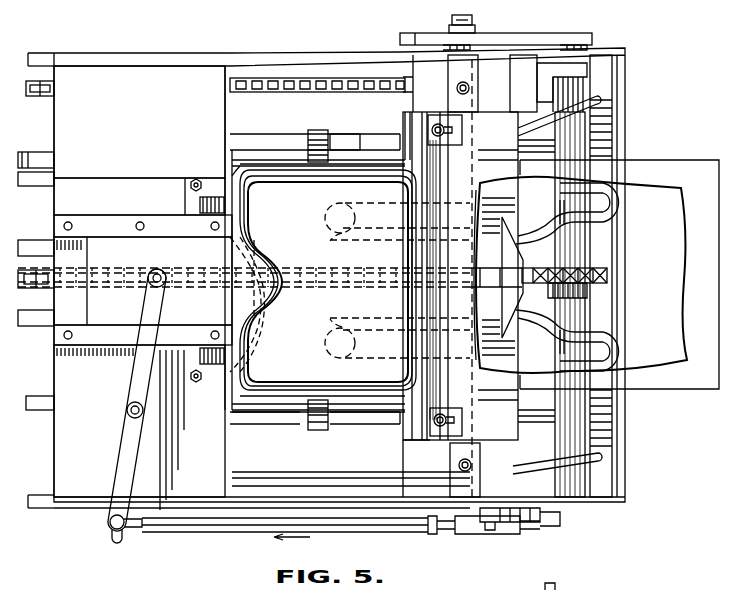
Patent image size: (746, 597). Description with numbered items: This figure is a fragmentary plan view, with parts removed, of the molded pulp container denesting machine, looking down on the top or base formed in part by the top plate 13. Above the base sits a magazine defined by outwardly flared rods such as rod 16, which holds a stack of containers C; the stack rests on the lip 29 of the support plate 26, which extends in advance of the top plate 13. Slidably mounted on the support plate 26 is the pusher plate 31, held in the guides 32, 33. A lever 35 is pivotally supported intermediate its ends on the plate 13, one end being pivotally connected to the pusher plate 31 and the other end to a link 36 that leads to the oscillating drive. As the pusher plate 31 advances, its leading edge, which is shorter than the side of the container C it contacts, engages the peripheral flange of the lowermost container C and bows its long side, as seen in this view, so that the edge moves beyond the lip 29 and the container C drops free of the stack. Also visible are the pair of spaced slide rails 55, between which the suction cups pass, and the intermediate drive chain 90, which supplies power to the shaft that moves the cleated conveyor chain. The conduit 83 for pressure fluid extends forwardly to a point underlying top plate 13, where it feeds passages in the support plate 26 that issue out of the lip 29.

The top plate 13 is at (153, 126).
The support plate 26 is at (155, 207).
The lip 29 is at (232, 176).
The pusher plate 31 is at (140, 261).
The guide 32 is at (92, 228).
The guide 33 is at (98, 335).
The lever 35 is at (125, 450).
The link 36 is at (199, 529).
The slide rails 55 is at (253, 160).
The rod 16 is at (321, 140).
The chain 90 is at (247, 92).
The container C is at (298, 212).
The conduit 83 is at (342, 488).